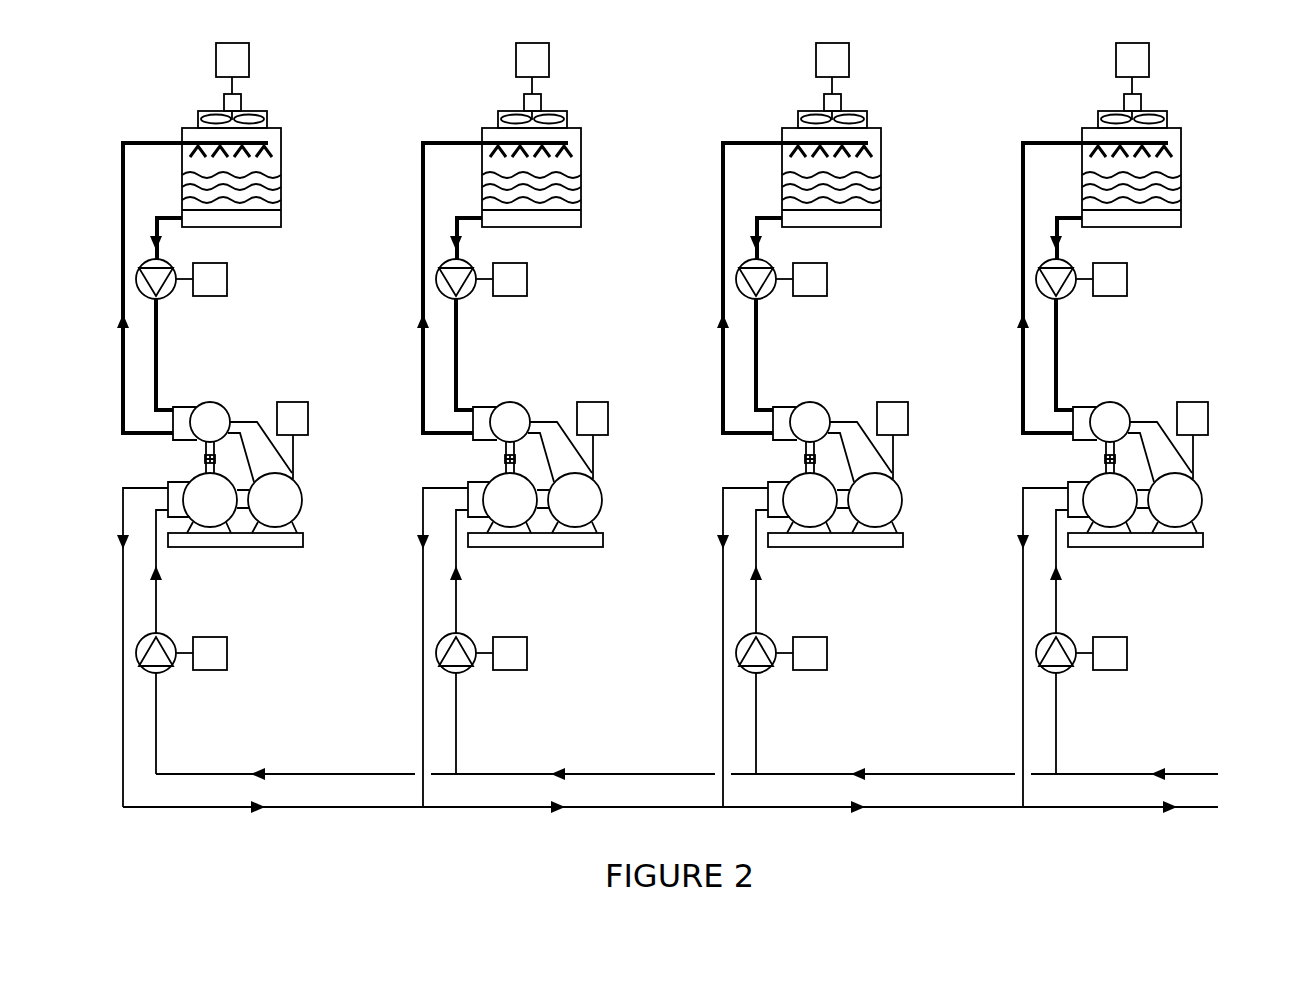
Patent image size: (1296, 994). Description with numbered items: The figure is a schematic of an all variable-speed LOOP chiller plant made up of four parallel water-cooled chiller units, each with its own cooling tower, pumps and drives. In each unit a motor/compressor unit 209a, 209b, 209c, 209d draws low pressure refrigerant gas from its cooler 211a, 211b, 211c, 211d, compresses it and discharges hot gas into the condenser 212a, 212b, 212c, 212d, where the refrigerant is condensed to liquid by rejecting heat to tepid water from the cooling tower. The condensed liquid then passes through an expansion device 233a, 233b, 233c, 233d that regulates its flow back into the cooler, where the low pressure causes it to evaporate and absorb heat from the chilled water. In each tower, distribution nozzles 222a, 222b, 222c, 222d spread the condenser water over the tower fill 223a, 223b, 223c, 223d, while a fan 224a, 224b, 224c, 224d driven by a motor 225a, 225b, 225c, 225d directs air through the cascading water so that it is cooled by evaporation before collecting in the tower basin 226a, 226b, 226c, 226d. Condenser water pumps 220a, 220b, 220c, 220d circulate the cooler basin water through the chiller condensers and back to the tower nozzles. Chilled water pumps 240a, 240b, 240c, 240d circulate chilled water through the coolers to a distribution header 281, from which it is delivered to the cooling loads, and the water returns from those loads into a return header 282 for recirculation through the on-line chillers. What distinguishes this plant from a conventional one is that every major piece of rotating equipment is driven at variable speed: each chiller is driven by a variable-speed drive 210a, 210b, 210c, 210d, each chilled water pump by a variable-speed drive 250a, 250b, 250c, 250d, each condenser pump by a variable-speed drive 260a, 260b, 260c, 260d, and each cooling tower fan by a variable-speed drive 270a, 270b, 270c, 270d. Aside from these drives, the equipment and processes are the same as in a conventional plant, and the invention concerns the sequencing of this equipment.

The variable-speed drive for cooling tower fan 270a is at (214, 52).
The variable-speed drive for cooling tower fan 270b is at (478, 68).
The variable-speed drive for cooling tower fan 270c is at (778, 68).
The variable-speed drive for cooling tower fan 270d is at (1078, 68).
The fan motor 225a is at (222, 102).
The fan motor 225b is at (474, 110).
The fan motor 225c is at (774, 110).
The fan motor 225d is at (1074, 110).
The cooling tower fan 224a is at (262, 117).
The cooling tower fan 224b is at (582, 115).
The cooling tower fan 224c is at (881, 115).
The cooling tower fan 224d is at (1182, 115).
The distribution nozzles 222a is at (272, 148).
The distribution nozzles 222b is at (580, 162).
The distribution nozzles 222c is at (879, 162).
The distribution nozzles 222d is at (1180, 162).
The tower fill 223a is at (272, 187).
The tower fill 223b is at (576, 191).
The tower fill 223c is at (875, 191).
The tower fill 223d is at (1176, 191).
The tower basin 226a is at (265, 218).
The tower basin 226b is at (572, 196).
The tower basin 226c is at (871, 196).
The tower basin 226d is at (1172, 196).
The condenser water pump 220a is at (171, 297).
The condenser water pump 220b is at (495, 299).
The condenser water pump 220c is at (794, 299).
The condenser water pump 220d is at (1095, 299).
The variable-speed drive for condenser pump 260a is at (231, 276).
The variable-speed drive for condenser pump 260b is at (552, 283).
The variable-speed drive for condenser pump 260c is at (851, 283).
The variable-speed drive for condenser pump 260d is at (1152, 283).
The condenser 212a is at (202, 397).
The condenser 212b is at (532, 418).
The condenser 212c is at (832, 418).
The condenser 212d is at (1132, 418).
The variable-speed drive for chiller 210a is at (293, 402).
The variable-speed drive for chiller 210b is at (625, 413).
The variable-speed drive for chiller 210c is at (924, 413).
The variable-speed drive for chiller 210d is at (1225, 413).
The expansion device 233a is at (199, 459).
The expansion device 233b is at (461, 458).
The expansion device 233c is at (761, 458).
The expansion device 233d is at (1061, 458).
The motor/compressor unit 209a is at (294, 478).
The motor/compressor unit 209b is at (611, 490).
The motor/compressor unit 209c is at (910, 490).
The motor/compressor unit 209d is at (1211, 490).
The cooler 211a is at (183, 521).
The cooler 211b is at (535, 534).
The cooler 211c is at (835, 534).
The cooler 211d is at (1135, 534).
The chilled water pump 240a is at (171, 671).
The chilled water pump 240b is at (494, 673).
The chilled water pump 240c is at (793, 673).
The chilled water pump 240d is at (1094, 673).
The variable-speed drive for chilled water pump 250a is at (231, 650).
The variable-speed drive for chilled water pump 250b is at (552, 657).
The variable-speed drive for chilled water pump 250c is at (851, 657).
The variable-speed drive for chilled water pump 250d is at (1152, 657).
The distribution header 281 is at (1108, 809).
The return header 282 is at (1123, 771).